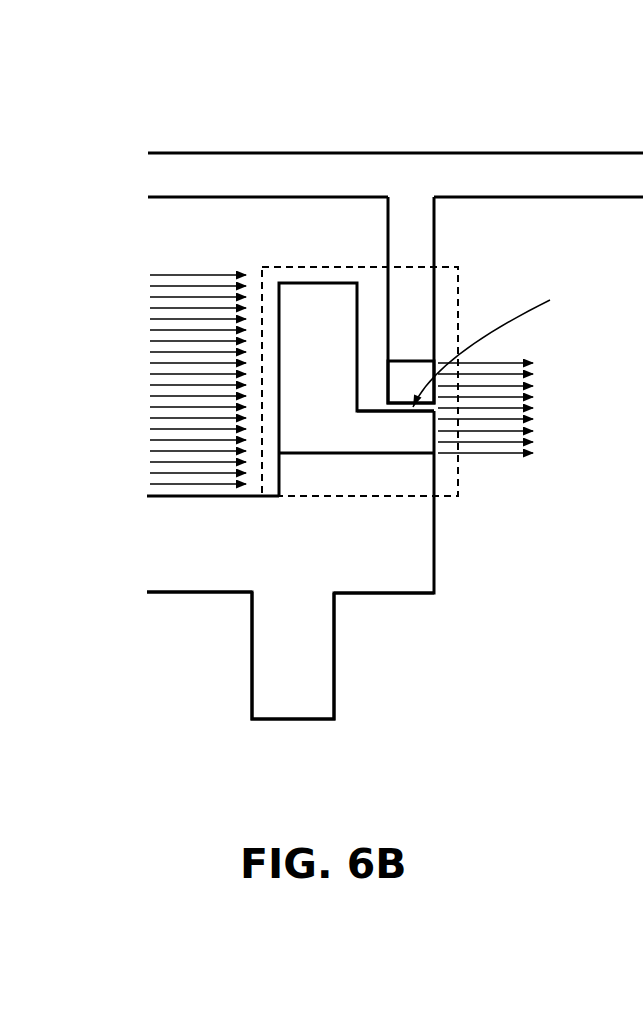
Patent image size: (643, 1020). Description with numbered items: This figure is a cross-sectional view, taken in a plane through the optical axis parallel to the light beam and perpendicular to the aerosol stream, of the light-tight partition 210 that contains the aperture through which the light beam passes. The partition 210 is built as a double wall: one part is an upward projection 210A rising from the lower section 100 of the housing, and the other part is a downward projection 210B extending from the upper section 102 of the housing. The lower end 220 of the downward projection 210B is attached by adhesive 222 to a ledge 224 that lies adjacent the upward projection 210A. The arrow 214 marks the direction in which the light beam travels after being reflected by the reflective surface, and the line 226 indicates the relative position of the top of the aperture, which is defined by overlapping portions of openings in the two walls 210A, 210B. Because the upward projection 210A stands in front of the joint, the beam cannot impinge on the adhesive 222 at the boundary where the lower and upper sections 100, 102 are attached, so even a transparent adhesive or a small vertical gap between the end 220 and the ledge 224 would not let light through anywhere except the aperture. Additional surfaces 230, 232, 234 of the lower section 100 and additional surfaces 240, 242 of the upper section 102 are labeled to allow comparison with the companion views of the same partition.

The lower section 100 is at (380, 580).
The upper section 102 is at (363, 146).
The partition 210 is at (307, 263).
The upward projection 210A is at (367, 411).
The downward projection 210B is at (408, 283).
The arrow 214 is at (175, 395).
The lower end 220 is at (397, 407).
The adhesive 222 is at (509, 347).
The ledge 224 is at (310, 430).
The line 226 is at (415, 357).
The additional surface 230 is at (320, 720).
The additional surface 232 is at (205, 498).
The additional surface 234 is at (290, 280).
The additional surface 240 is at (440, 152).
The additional surface 242 is at (555, 200).